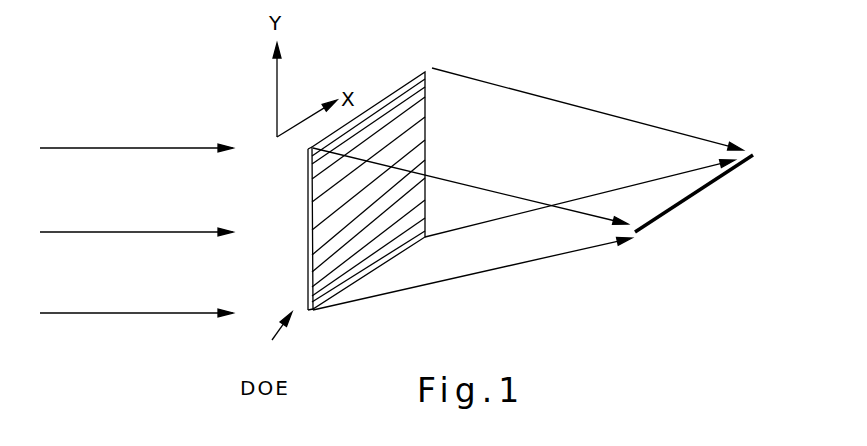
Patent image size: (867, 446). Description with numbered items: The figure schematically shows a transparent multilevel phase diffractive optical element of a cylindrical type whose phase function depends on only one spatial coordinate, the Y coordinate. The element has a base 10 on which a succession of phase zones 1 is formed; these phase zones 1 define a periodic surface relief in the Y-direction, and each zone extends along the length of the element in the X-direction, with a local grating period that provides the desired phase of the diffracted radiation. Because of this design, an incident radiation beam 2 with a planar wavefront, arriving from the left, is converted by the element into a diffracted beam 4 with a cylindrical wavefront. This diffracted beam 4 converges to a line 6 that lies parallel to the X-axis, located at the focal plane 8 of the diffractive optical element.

The incident radiation beam 2 is at (106, 131).
The base 10 is at (383, 85).
The phase zones 1 is at (320, 258).
The diffracted beam 4 is at (609, 83).
The focal plane 8 is at (765, 128).
The line 6 is at (670, 212).